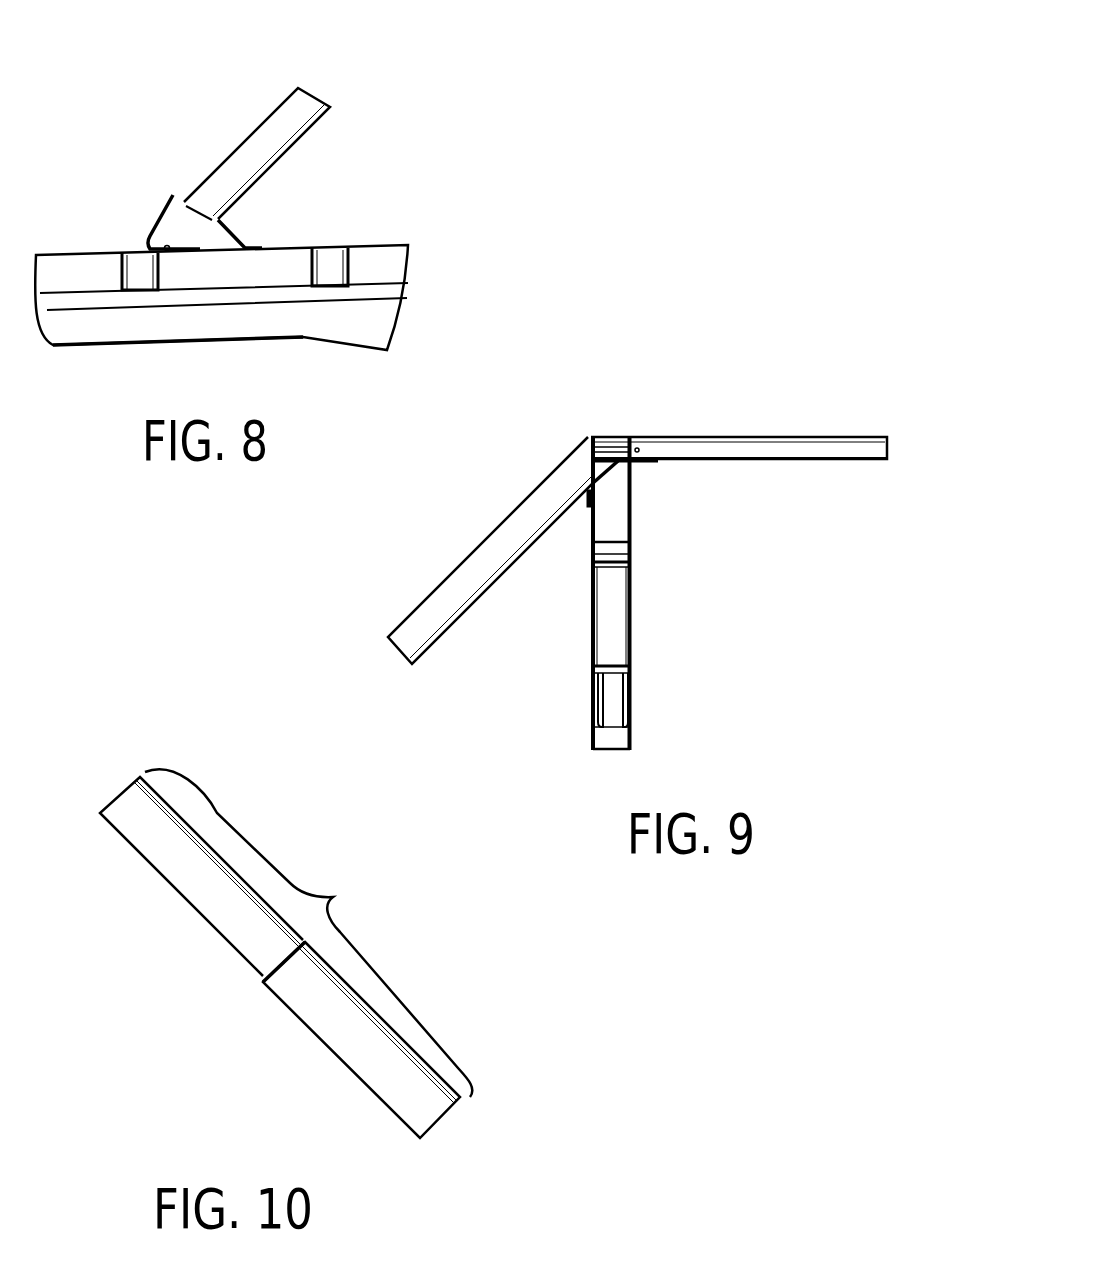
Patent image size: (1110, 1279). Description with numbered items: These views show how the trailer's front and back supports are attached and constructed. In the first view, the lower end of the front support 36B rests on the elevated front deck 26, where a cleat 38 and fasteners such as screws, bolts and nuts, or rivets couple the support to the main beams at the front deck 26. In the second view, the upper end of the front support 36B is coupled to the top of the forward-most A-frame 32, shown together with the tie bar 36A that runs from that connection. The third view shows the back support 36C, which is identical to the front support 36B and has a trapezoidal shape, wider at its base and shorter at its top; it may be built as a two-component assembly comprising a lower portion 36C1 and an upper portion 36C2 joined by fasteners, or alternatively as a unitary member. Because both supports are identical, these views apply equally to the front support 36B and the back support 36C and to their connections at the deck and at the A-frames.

In FIG. 8, the front deck 26 is at (87, 248).
In FIG. 9, the A-frame 32 is at (633, 607).
In FIG. 9, the tie bar 36A is at (788, 437).
In FIG. 8, the front support 36B is at (222, 142).
In FIG. 9, the front support 36B is at (455, 553).
In FIG. 10, the back support 36C is at (308, 933).
In FIG. 10, the lower portion 36C1 is at (337, 1056).
In FIG. 10, the upper portion 36C2 is at (195, 908).
In FIG. 8, the cleat 38 is at (157, 220).